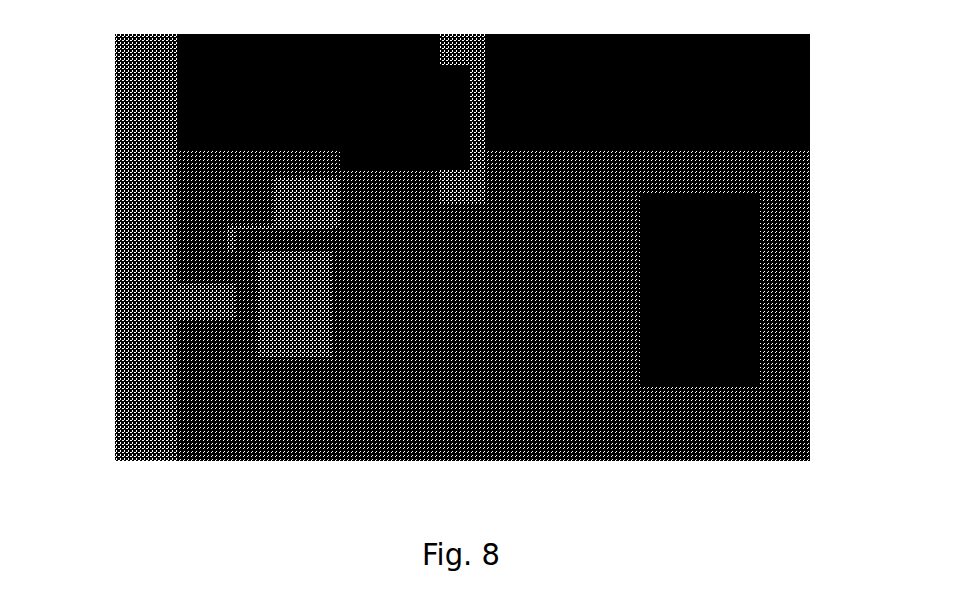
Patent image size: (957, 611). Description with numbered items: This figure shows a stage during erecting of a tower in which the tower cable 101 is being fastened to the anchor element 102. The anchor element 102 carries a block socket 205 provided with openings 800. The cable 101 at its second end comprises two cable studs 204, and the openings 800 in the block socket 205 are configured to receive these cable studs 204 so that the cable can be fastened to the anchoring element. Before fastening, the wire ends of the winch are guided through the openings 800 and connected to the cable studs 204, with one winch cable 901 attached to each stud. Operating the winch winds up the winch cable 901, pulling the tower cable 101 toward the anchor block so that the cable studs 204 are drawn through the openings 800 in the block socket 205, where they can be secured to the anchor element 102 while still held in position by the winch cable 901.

The cable 101 is at (790, 287).
The anchor element 102 is at (150, 313).
The cable studs 204 is at (637, 355).
The block socket 205 is at (462, 98).
The openings 800 is at (492, 155).
The winch cable 901 is at (268, 355).